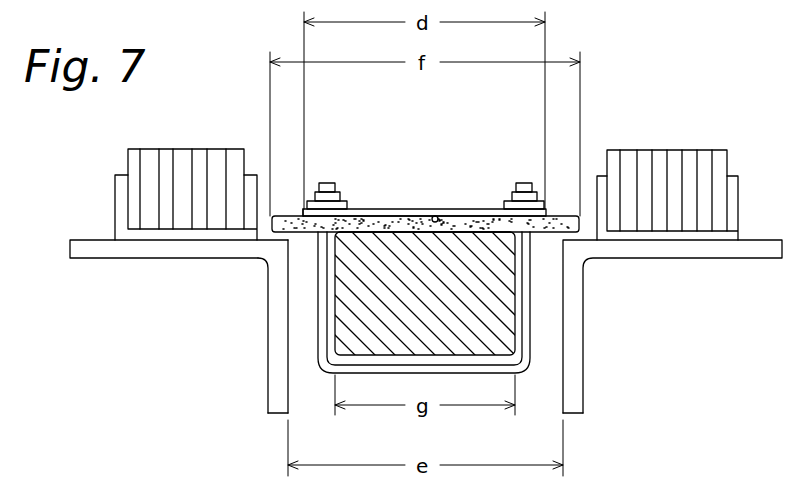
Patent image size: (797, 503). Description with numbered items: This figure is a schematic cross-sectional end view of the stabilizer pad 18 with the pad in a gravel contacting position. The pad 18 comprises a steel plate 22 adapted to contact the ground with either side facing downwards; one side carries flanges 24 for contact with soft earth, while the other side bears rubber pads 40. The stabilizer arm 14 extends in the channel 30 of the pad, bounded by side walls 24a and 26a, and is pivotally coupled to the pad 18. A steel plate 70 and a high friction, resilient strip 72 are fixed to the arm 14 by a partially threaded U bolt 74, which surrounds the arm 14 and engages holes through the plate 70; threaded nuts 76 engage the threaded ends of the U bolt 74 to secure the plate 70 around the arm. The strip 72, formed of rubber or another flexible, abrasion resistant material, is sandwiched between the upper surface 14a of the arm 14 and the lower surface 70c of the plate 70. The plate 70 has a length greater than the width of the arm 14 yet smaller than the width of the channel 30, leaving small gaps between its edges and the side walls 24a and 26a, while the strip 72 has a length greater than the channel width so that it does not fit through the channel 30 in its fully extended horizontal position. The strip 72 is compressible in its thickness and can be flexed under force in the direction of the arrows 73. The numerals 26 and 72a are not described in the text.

The stabilizer arm 14 is at (342, 300).
The upper surface of the arm 14a is at (474, 230).
The pad 18 is at (406, 320).
The steel plate 22 is at (76, 240).
The flanges 24 is at (268, 298).
The side wall 24a is at (289, 400).
The right side wall / flange 26 is at (583, 291).
The side wall 26a is at (563, 398).
The channel 30 is at (308, 386).
The rubber pads 40 is at (181, 149).
The steel plate 70 is at (402, 210).
The lower surface of the plate 70c is at (434, 214).
The high friction, resilient strip 72 is at (373, 220).
The edge of cover plate 72a is at (457, 220).
The arrows 73 is at (295, 188).
The U bolt 74 is at (530, 320).
The threaded nuts 76 is at (344, 192).